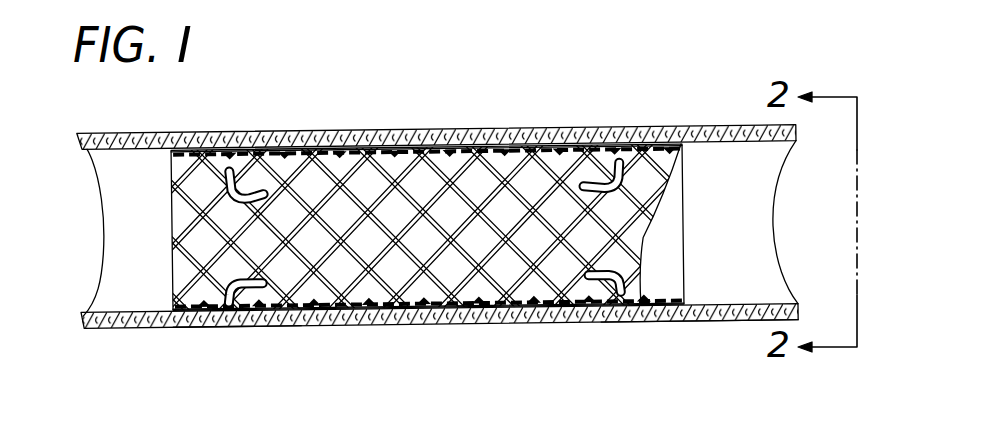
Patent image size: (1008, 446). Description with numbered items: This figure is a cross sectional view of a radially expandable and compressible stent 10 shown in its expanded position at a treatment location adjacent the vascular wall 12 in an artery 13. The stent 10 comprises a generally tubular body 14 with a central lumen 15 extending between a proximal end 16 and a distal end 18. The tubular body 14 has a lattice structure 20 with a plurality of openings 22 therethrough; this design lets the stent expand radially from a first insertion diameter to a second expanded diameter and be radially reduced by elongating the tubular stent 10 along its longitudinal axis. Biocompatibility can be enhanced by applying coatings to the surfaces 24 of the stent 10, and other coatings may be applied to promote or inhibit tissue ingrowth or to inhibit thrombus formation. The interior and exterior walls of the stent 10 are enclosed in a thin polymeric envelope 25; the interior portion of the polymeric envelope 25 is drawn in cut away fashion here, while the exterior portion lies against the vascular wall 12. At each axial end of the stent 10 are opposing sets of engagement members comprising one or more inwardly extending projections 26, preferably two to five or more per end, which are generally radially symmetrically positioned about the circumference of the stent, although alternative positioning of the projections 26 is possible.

The stent 10 is at (653, 152).
The vascular wall 12 is at (91, 151).
The artery 13 is at (84, 313).
The tubular body 14 is at (450, 208).
The central lumen 15 is at (150, 223).
The proximal end 16 is at (173, 327).
The distal end 18 is at (692, 325).
The lattice structure 20 is at (527, 170).
The openings 22 is at (372, 187).
The surfaces 24 is at (307, 148).
The polymeric envelope 25 is at (677, 272).
The inwardly extending projections 26 is at (222, 170).